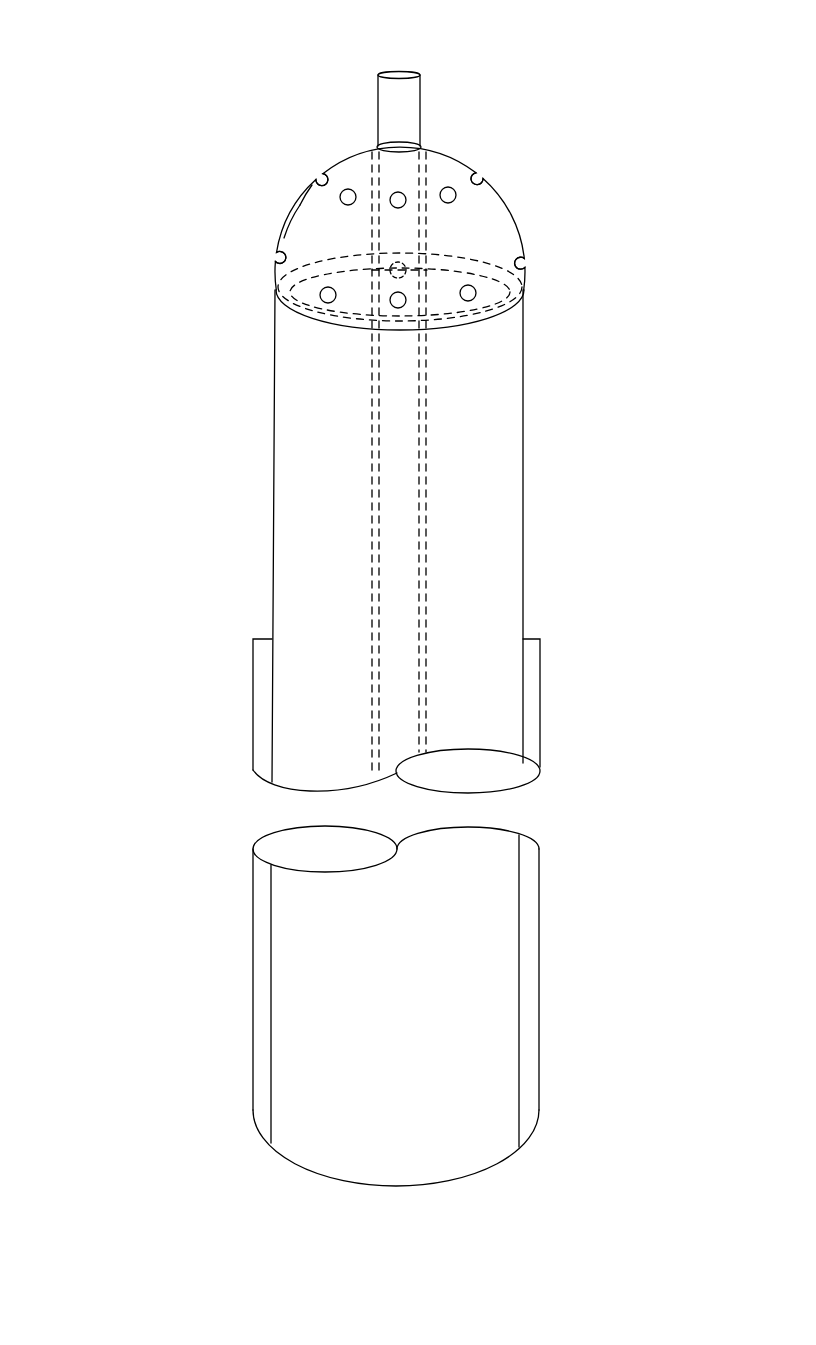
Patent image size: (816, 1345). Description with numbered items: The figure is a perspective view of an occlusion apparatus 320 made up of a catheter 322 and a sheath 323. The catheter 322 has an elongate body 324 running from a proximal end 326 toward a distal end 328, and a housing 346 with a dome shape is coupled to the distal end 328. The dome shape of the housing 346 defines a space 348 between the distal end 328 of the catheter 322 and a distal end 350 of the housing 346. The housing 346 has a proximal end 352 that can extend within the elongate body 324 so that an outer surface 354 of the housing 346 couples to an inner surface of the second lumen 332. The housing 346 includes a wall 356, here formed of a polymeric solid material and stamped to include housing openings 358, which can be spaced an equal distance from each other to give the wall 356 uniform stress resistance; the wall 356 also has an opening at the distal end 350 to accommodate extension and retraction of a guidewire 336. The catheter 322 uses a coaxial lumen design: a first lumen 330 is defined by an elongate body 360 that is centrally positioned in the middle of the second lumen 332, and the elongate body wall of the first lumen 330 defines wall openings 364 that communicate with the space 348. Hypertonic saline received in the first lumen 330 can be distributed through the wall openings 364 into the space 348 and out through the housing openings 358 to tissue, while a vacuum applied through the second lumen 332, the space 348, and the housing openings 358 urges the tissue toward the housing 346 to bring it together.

The occlusion apparatus 320 is at (153, 50).
The catheter 322 is at (597, 361).
The sheath 323 is at (538, 706).
The elongate body 324 is at (524, 566).
The proximal end 326 is at (567, 951).
The distal end 328 is at (544, 302).
The first lumen 330 is at (426, 148).
The second lumen 332 is at (498, 290).
The guidewire 336 is at (421, 86).
The housing 346 is at (551, 157).
The space 348 is at (302, 228).
The distal end of the housing 350 is at (363, 133).
The proximal end of the housing 352 is at (544, 277).
The outer surface 354 is at (294, 192).
The wall 356 is at (274, 279).
The housing openings 358 is at (484, 172).
The elongate body 360 is at (428, 388).
The wall openings 364 is at (407, 263).